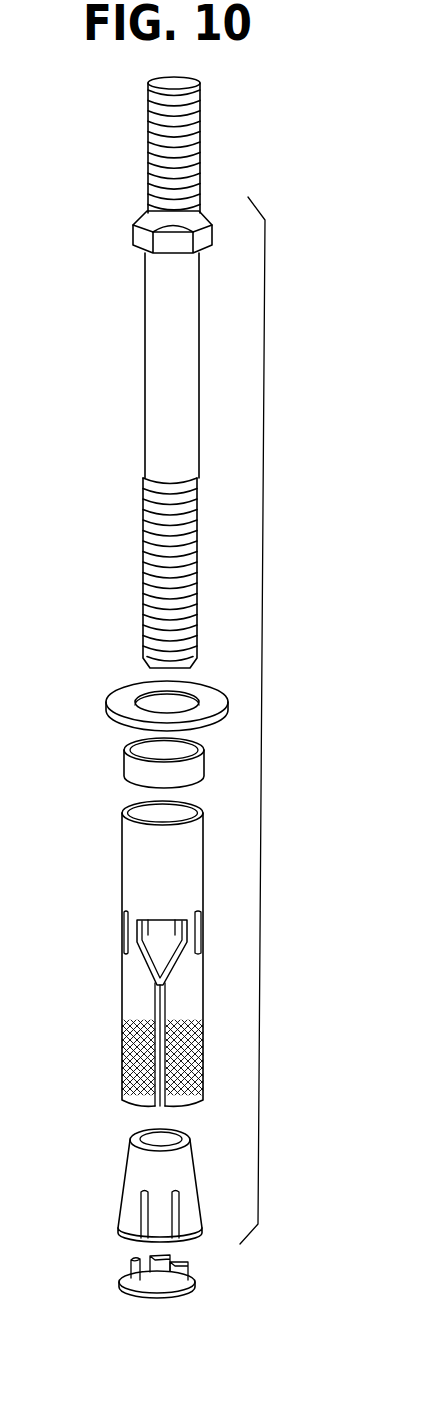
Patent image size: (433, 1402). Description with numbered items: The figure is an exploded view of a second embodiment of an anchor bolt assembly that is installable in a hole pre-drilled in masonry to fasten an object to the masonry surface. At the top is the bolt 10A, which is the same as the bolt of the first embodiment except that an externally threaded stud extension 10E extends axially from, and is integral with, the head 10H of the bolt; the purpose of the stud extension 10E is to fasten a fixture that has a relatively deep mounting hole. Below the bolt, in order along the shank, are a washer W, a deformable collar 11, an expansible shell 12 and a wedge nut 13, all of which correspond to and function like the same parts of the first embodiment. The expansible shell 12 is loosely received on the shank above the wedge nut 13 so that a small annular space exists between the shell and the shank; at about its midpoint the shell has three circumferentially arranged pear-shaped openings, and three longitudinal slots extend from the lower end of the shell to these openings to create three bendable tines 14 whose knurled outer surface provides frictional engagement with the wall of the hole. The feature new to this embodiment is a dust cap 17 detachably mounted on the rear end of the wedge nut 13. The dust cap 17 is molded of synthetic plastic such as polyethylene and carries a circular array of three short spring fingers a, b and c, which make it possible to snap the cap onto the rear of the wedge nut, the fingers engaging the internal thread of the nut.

The bolt 10A is at (130, 372).
The stud extension 10E is at (145, 125).
The head 10H is at (133, 229).
The washer W is at (123, 693).
The deformable collar 11 is at (133, 771).
The expansible shell 12 is at (124, 953).
The bendable tines 14 is at (120, 1060).
The wedge nut 13 is at (118, 1191).
The dust cap 17 is at (151, 1293).
The spring finger a is at (130, 1276).
The spring finger b is at (172, 1258).
The spring finger c is at (180, 1285).